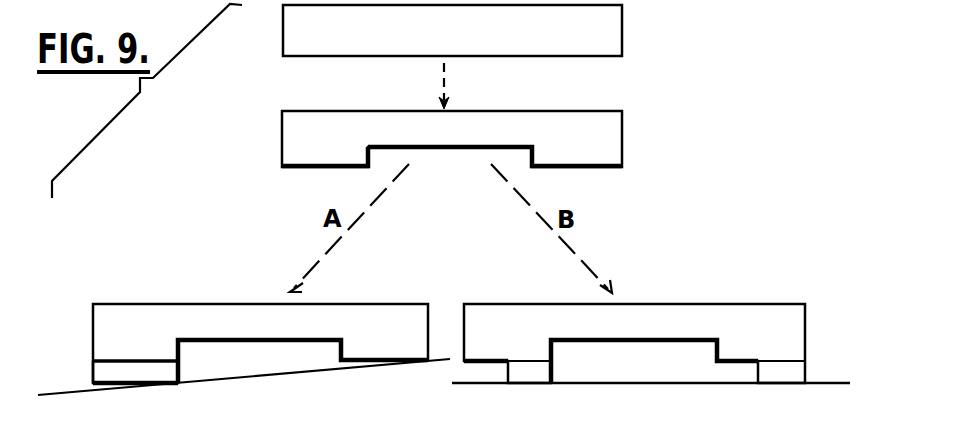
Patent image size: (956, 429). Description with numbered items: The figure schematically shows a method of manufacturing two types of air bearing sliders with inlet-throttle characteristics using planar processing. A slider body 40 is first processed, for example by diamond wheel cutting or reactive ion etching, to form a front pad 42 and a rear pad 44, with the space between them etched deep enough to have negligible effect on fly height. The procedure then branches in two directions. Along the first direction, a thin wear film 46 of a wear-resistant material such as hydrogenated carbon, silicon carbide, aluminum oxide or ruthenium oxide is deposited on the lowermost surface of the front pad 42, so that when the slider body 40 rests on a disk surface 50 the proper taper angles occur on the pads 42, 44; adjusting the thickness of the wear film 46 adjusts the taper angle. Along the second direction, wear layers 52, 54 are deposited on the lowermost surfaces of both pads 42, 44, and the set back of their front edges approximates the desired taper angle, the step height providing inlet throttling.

The slider body 40 is at (612, 31).
The front pad 42 is at (298, 141).
The rear pad 44 is at (603, 154).
The wear film 46 is at (160, 373).
The disk surface 50 is at (279, 377).
The wear layer 52 is at (535, 372).
The wear layer 54 is at (790, 372).